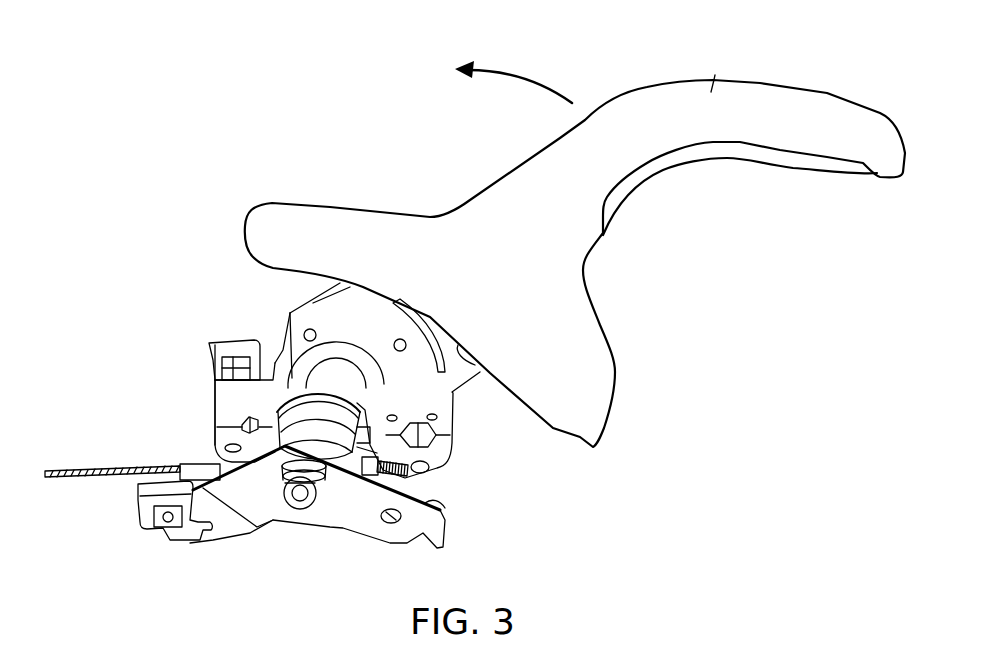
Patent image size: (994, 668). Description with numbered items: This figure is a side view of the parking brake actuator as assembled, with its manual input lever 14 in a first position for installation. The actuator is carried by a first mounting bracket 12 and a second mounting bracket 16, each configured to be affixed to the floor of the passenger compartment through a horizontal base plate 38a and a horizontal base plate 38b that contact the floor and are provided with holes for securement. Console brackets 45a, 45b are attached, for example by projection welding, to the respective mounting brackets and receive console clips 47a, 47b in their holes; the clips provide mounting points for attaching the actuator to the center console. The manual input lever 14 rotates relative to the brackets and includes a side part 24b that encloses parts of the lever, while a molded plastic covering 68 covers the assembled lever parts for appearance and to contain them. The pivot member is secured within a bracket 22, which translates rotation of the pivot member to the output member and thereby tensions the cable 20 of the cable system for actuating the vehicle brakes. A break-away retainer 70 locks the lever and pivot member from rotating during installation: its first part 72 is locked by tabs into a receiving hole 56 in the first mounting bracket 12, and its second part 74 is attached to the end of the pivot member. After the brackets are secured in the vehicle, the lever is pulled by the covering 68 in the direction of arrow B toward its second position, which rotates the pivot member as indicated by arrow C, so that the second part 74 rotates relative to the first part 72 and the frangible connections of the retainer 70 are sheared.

The first mounting bracket 12 is at (240, 486).
The manual input lever 14 is at (802, 98).
The second mounting bracket 16 is at (280, 355).
The cable 20 is at (86, 466).
The bracket 22 is at (361, 404).
The second side part 24b is at (465, 376).
The horizontal base plate 38a is at (438, 503).
The horizontal base plate 38b is at (437, 462).
The console bracket 45a is at (178, 542).
The console bracket 45b is at (221, 342).
The console clip 47a is at (153, 511).
The console clip 47b is at (228, 366).
The receiving hole 56 is at (327, 474).
The molded plastic covering 68 is at (715, 76).
The break-away retainer 70 is at (321, 505).
The first part of retainer 72 is at (222, 438).
The second part of retainer 74 is at (300, 505).
The arrow B is at (533, 80).
The arrow C is at (312, 433).